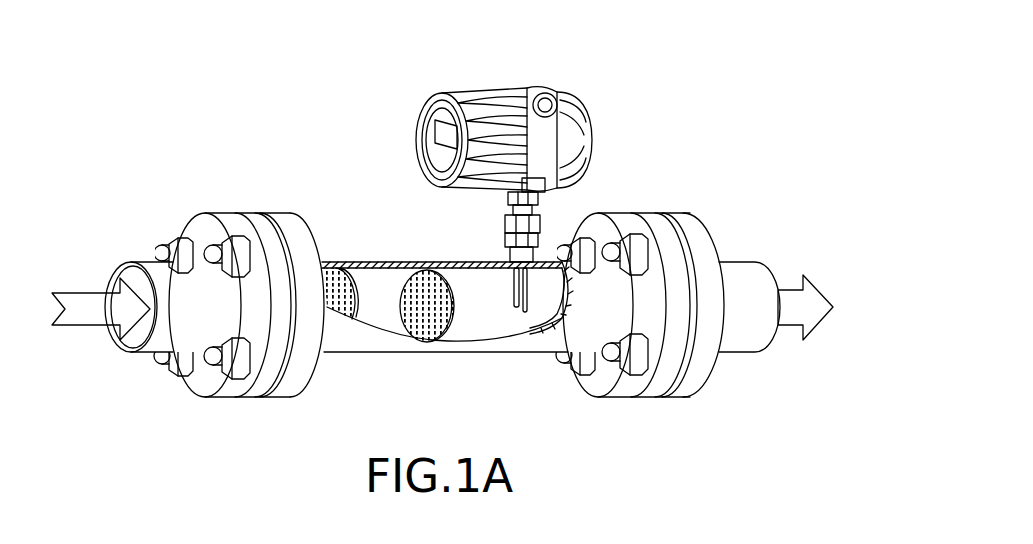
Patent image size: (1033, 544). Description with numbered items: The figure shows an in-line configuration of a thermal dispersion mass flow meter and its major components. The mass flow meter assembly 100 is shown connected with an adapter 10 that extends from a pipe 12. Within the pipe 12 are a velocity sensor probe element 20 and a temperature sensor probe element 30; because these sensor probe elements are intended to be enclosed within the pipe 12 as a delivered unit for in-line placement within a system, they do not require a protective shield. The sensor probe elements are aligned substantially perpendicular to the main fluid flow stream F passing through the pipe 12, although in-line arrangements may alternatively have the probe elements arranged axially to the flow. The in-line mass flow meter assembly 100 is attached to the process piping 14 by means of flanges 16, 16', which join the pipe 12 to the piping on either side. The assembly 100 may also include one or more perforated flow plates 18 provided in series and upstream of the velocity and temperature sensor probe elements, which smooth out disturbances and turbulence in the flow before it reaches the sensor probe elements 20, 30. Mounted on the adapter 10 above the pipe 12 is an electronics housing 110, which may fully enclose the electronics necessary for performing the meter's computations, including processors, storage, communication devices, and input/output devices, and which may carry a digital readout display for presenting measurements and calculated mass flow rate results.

The main fluid flow stream F is at (82, 300).
The adapter 10 is at (474, 240).
The pipe 12 is at (383, 344).
The process piping 14 is at (168, 342).
The flange 16 is at (472, 334).
The flange 16' is at (439, 334).
The perforated flow plate 18 is at (415, 283).
The velocity sensor probe element 20 is at (523, 314).
The temperature sensor probe element 30 is at (516, 302).
The mass flow meter assembly 100 is at (348, 155).
The electronics housing 110 is at (626, 118).